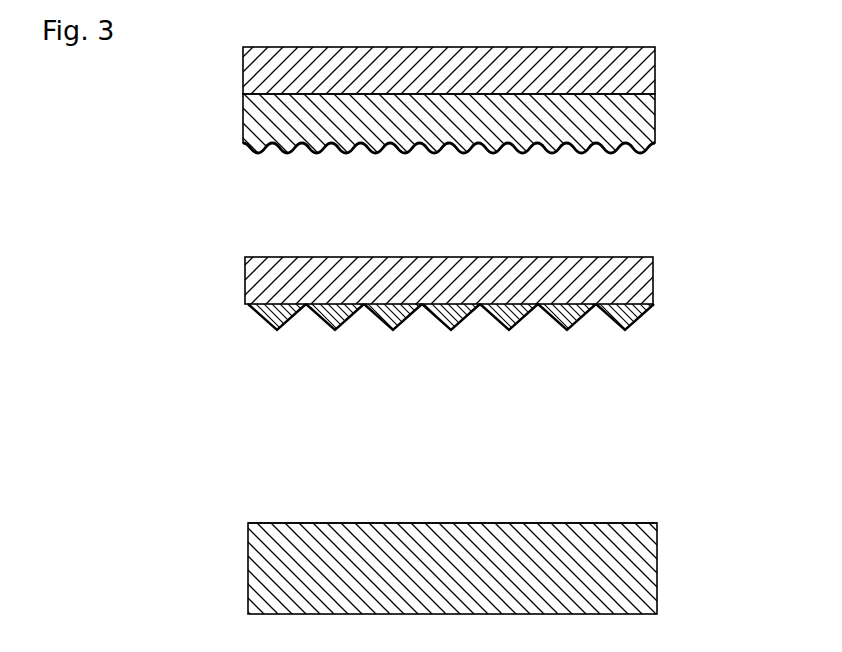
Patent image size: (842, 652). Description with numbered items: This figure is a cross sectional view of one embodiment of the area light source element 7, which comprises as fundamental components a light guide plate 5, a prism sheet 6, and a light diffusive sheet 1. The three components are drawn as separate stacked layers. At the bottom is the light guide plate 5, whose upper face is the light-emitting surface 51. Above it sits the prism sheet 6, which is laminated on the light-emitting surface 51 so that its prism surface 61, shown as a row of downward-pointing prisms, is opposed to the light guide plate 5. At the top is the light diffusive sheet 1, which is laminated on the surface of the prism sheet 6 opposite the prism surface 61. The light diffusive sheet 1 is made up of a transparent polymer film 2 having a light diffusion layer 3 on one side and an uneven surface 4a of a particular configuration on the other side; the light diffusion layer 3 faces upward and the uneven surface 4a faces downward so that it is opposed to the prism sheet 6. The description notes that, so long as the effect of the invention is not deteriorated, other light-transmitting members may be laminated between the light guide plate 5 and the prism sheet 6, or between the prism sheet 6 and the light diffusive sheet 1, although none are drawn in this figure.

The light diffusive sheet 1 is at (448, 144).
The transparent polymer film 2 is at (477, 171).
The light diffusion layer 3 is at (657, 63).
The uneven surface 4a is at (449, 197).
The light guide plate 5 is at (473, 528).
The light-emitting surface 51 is at (452, 483).
The prism sheet 6 is at (479, 347).
The prism surface 61 is at (451, 371).
The area light source element 7 is at (484, 319).